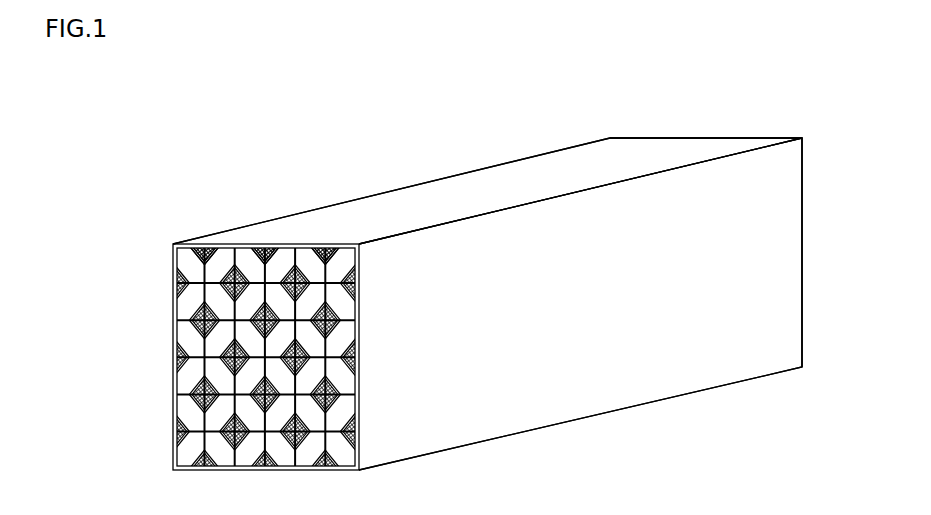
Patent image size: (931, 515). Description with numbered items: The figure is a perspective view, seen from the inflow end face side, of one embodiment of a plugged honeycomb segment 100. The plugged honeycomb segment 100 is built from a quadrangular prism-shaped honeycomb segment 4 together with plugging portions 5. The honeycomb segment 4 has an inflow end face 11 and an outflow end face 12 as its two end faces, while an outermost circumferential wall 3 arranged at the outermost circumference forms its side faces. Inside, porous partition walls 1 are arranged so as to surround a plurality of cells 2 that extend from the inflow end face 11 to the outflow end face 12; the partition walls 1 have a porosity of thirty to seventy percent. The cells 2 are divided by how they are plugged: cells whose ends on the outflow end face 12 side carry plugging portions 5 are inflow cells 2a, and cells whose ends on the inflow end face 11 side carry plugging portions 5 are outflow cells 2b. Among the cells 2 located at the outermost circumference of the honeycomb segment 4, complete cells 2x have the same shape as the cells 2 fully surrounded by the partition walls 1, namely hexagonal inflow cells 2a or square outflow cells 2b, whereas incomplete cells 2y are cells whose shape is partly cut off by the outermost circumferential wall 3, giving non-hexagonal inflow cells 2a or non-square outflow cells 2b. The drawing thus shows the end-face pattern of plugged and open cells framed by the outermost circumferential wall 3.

The plugged honeycomb segment 100 is at (752, 72).
The partition walls 1 is at (273, 258).
The cells 2 is at (334, 325).
The inflow cells 2a is at (327, 253).
The outflow cells 2b is at (218, 248).
The complete cells 2x is at (327, 253).
The incomplete cells 2y is at (358, 430).
The outermost circumferential wall 3 is at (623, 382).
The honeycomb segment 4 is at (606, 137).
The plugging portions 5 is at (235, 432).
The inflow end face 11 is at (160, 283).
The outflow end face 12 is at (812, 146).